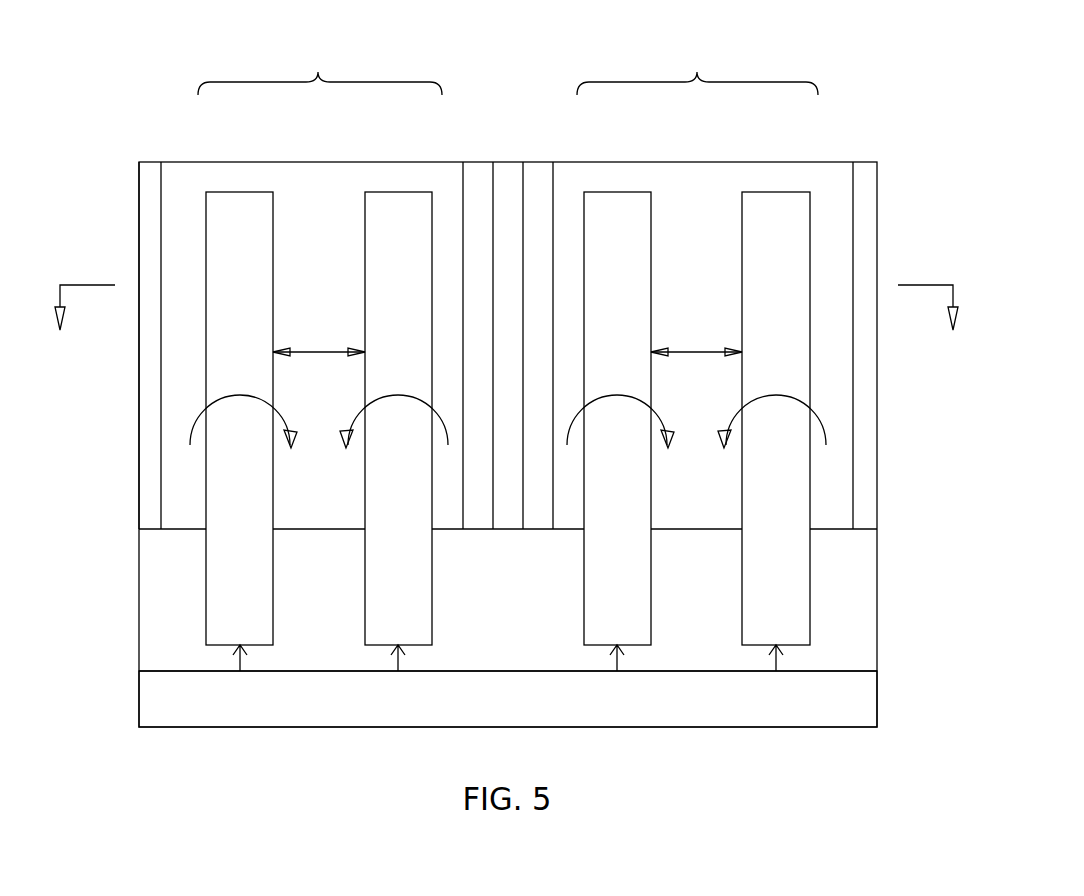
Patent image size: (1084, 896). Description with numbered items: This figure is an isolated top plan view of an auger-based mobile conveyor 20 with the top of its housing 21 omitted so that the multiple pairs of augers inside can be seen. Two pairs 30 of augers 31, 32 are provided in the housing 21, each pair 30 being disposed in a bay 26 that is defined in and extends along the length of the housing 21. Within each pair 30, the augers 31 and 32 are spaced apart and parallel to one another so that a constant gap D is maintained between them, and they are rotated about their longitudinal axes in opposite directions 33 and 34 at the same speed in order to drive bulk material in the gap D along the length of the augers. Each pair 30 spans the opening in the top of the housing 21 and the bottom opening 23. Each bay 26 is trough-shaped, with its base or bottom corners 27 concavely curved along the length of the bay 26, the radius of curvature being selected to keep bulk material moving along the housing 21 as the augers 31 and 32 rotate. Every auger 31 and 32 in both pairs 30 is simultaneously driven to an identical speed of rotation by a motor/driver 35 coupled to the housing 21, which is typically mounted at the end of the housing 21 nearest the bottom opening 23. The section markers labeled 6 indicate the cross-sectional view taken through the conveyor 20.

The mobile conveyor 20 is at (101, 147).
The housing 21 is at (139, 462).
The bottom opening 23 is at (492, 613).
The bay 26 is at (318, 218).
The concavely-curved bottom corners 27 is at (478, 192).
The pair of augers 30 is at (318, 72).
The auger 31 is at (240, 200).
The auger 32 is at (400, 200).
The direction of rotation 33 is at (244, 395).
The direction of rotation 34 is at (398, 395).
The motor/driver 35 is at (250, 703).
The section line for FIG. 6 is at (508, 324).